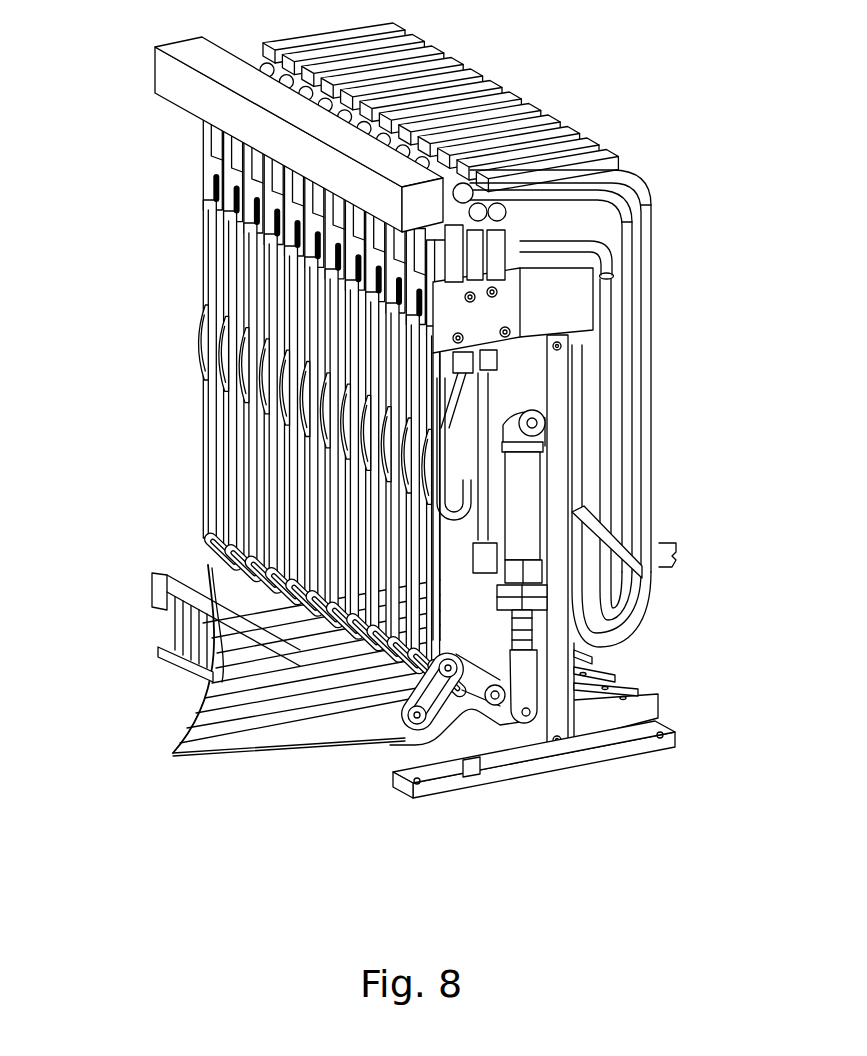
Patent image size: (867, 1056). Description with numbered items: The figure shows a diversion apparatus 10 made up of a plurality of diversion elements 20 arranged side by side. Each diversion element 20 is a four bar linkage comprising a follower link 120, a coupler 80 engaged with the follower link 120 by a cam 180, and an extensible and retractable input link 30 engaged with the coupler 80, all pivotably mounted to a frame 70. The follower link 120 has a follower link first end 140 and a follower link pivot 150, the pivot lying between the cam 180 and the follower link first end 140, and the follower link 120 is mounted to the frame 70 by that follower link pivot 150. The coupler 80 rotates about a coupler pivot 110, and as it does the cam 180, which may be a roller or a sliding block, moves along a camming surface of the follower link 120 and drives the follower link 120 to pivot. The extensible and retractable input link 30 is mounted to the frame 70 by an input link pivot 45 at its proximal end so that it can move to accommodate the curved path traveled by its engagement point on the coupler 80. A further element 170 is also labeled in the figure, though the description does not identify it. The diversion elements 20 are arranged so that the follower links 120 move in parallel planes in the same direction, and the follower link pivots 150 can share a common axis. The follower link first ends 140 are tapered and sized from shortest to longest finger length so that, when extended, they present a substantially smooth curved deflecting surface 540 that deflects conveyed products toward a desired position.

The diversion apparatus 10 is at (598, 112).
The diversion element 20 is at (655, 469).
The extensible and retractable input link 30 is at (518, 483).
The input link pivot 45 is at (547, 423).
The frame 70 is at (482, 611).
The coupler 80 is at (477, 690).
The coupler pivot 110 is at (497, 703).
The follower link 120 is at (300, 743).
The follower link first end 140 is at (200, 682).
The follower link pivot 150 is at (413, 723).
The support post 170 is at (541, 742).
The cam 180 is at (447, 700).
The deflecting surface 540 is at (203, 690).